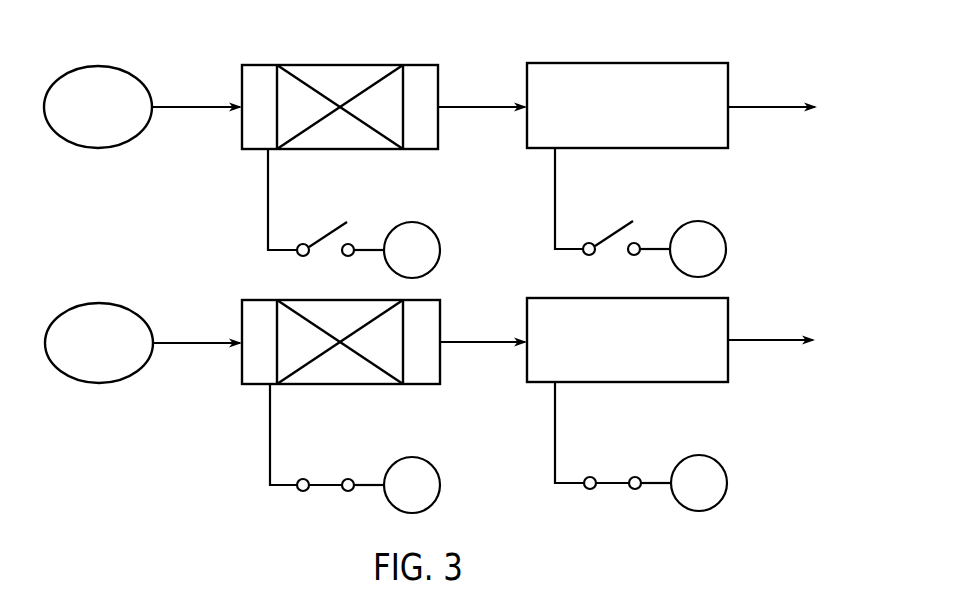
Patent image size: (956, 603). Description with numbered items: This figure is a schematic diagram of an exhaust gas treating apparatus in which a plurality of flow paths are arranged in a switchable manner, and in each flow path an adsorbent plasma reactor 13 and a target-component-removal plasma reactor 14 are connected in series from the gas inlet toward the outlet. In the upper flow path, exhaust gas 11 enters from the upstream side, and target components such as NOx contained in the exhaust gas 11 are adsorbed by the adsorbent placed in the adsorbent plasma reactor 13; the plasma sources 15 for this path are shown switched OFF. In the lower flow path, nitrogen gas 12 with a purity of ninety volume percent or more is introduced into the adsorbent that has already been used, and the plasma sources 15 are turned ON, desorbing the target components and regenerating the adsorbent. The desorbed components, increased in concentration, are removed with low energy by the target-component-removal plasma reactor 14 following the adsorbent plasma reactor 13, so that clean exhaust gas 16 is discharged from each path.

The exhaust gas 11 is at (95, 67).
The nitrogen gas 12 is at (97, 303).
The adsorbent plasma reactor 13 is at (260, 65).
The target-component-removal plasma reactor 14 is at (546, 63).
The plasma source 15 is at (438, 228).
The clean exhaust gas 16 is at (784, 105).